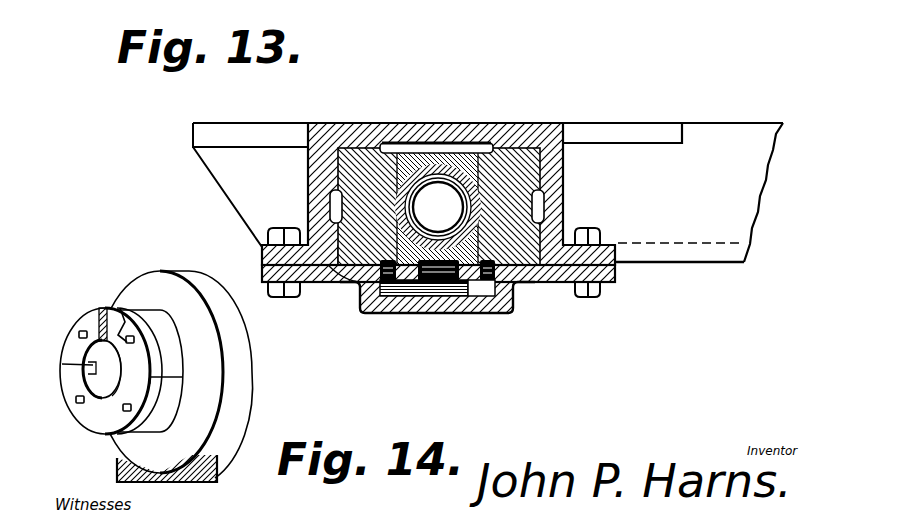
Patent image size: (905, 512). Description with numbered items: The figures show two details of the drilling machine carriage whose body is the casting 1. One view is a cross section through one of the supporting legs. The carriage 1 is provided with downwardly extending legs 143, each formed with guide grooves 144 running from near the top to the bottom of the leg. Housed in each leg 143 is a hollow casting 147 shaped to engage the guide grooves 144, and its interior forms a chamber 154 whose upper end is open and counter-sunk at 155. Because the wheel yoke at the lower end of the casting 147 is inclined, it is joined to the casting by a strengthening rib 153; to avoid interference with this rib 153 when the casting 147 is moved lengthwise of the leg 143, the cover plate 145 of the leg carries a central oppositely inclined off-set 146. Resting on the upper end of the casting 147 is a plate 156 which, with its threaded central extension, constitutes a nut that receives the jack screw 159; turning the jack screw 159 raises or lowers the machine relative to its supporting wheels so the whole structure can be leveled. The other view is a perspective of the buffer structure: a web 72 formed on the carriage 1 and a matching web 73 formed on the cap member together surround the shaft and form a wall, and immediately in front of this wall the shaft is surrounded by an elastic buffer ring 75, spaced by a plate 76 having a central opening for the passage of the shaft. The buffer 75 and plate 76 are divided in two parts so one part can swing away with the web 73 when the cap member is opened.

In FIG. 13, the casting 1 is at (728, 132).
In FIG. 13, the downwardly extending legs 143 is at (553, 170).
In FIG. 13, the guide grooves 144 is at (355, 148).
In FIG. 13, the cover plate 145 is at (328, 282).
In FIG. 13, the oppositely inclined off-set 146 is at (440, 300).
In FIG. 13, the hollow casting 147 is at (527, 157).
In FIG. 13, the strengthening rib 153 is at (470, 296).
In FIG. 13, the chamber 154 is at (447, 160).
In FIG. 13, the counter-sunk upper end 155 is at (432, 170).
In FIG. 13, the plate 156 is at (366, 313).
In FIG. 13, the jack screw 159 is at (443, 208).
In FIG. 14, the web 72 is at (193, 463).
In FIG. 14, the matching web 73 is at (183, 290).
In FIG. 14, the buffer ring 75 is at (173, 363).
In FIG. 14, the plate 76 is at (73, 390).